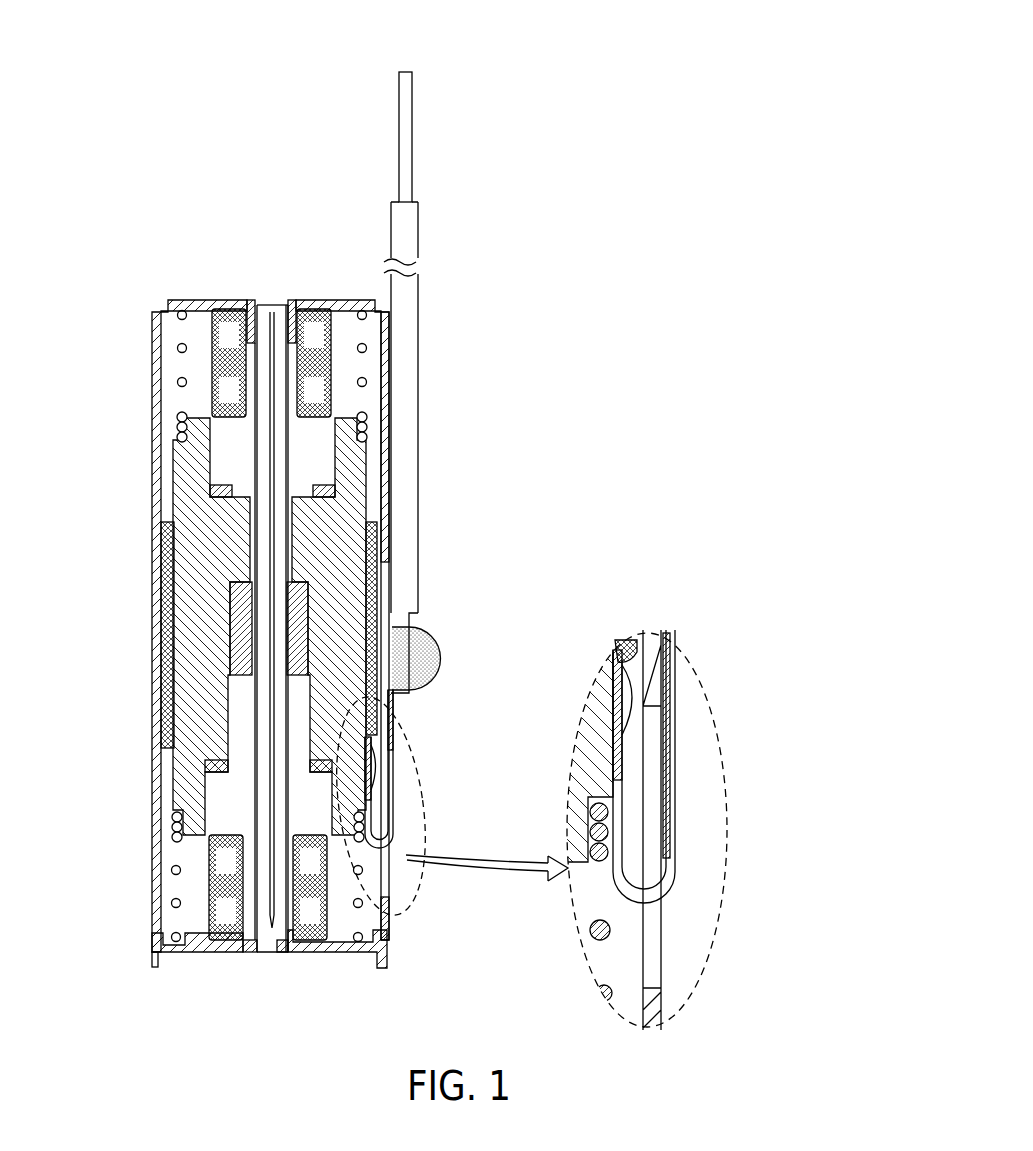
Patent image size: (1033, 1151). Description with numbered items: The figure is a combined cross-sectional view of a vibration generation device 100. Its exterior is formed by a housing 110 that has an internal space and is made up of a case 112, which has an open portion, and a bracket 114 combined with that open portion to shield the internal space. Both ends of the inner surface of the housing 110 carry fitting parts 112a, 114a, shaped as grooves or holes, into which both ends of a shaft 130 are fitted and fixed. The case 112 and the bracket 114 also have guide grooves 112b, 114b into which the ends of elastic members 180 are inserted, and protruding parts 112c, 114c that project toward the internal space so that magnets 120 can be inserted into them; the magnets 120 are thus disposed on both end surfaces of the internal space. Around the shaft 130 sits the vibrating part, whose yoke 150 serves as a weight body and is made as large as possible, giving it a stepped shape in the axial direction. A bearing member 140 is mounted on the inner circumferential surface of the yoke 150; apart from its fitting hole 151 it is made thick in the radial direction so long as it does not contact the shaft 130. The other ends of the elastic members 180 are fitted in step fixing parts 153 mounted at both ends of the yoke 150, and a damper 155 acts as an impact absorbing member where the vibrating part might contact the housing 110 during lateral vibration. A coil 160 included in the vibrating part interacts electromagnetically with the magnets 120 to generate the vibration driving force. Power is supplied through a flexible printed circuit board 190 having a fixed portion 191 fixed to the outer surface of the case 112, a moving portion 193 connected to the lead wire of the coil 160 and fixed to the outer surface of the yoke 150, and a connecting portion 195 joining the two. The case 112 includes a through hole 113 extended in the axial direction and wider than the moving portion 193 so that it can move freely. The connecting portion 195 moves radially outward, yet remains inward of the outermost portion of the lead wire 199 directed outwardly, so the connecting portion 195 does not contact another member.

The vibration generation device 100 is at (170, 71).
The housing 110 is at (485, 932).
The case 112 is at (387, 927).
The fitting part 112a is at (278, 318).
The guide groove 112b is at (203, 312).
The protruding part 112c is at (241, 313).
The through hole 113 is at (383, 888).
The bracket 114 is at (343, 953).
The fitting part 114a is at (270, 953).
The guide groove 114b is at (187, 953).
The protruding part 114c is at (253, 953).
The magnets 120 is at (333, 357).
The shaft 130 is at (273, 397).
The bearing member 140 is at (302, 597).
The yoke 150 is at (352, 512).
The fitting hole 151 is at (237, 710).
The step fixing parts 153 is at (178, 420).
The damper 155 is at (214, 490).
The coil 160 is at (378, 593).
The elastic members 180 is at (180, 345).
The flexible printed circuit board 190 is at (497, 718).
The fixed portion 191 is at (390, 713).
The moving portion 193 is at (370, 780).
The connecting portion 195 is at (393, 827).
The lead wire 199 is at (412, 296).